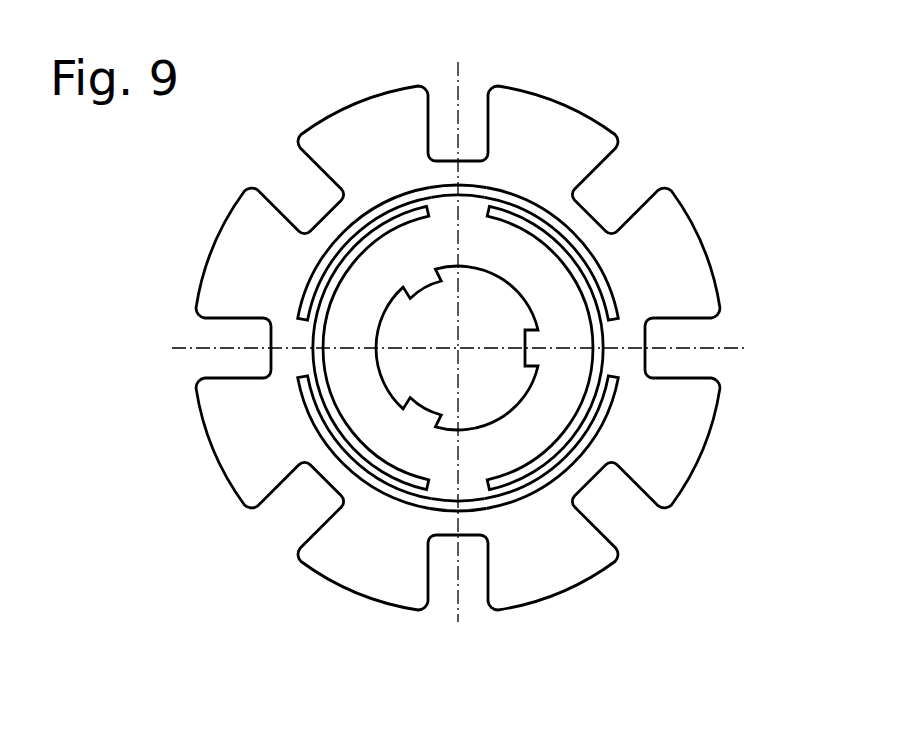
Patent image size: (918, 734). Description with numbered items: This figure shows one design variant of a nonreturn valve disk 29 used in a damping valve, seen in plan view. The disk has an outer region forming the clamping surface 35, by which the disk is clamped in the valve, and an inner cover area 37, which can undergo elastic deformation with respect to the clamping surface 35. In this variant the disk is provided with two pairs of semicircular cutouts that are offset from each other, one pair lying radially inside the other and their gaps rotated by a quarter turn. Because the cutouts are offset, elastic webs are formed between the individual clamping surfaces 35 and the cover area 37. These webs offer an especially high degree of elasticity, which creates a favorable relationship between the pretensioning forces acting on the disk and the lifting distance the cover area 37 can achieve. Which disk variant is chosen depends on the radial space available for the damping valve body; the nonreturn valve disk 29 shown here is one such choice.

The nonreturn valve disk 29 is at (690, 58).
The clamping surface 35 is at (665, 465).
The cover area 37 is at (545, 290).